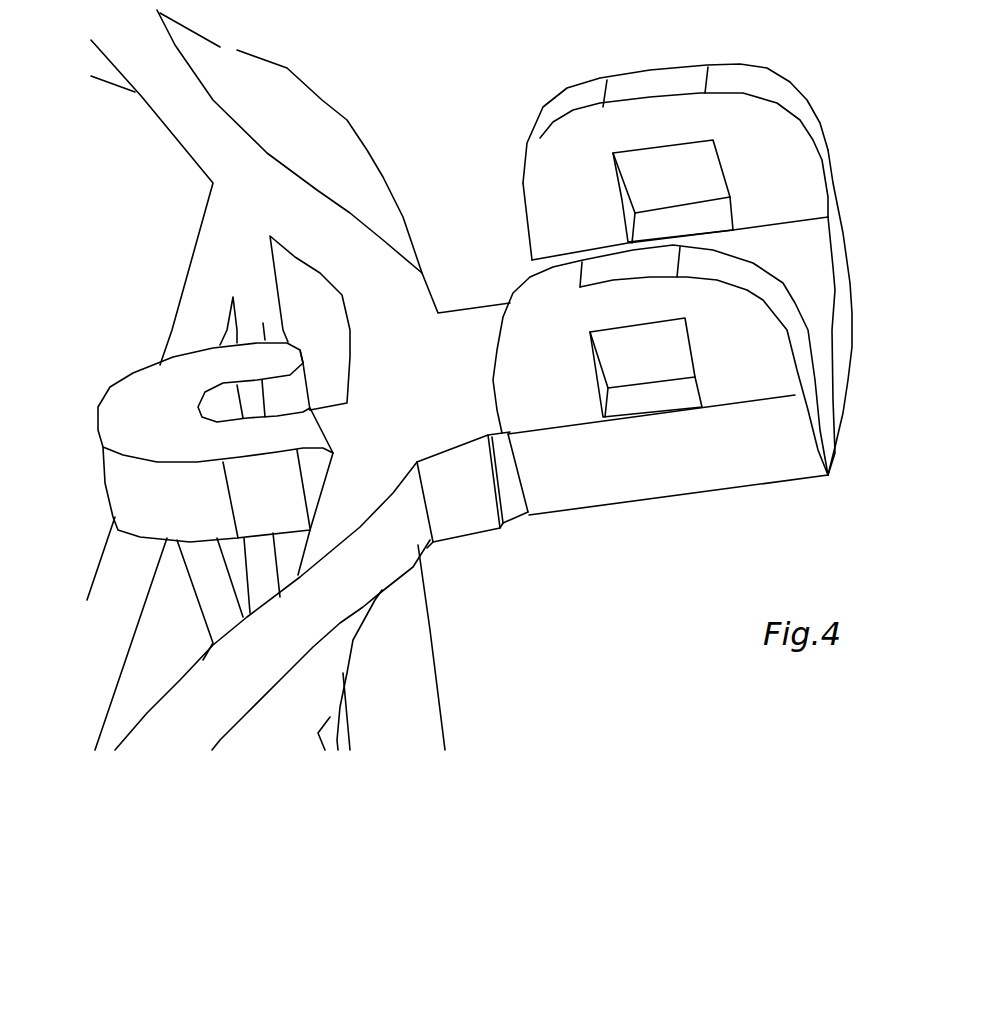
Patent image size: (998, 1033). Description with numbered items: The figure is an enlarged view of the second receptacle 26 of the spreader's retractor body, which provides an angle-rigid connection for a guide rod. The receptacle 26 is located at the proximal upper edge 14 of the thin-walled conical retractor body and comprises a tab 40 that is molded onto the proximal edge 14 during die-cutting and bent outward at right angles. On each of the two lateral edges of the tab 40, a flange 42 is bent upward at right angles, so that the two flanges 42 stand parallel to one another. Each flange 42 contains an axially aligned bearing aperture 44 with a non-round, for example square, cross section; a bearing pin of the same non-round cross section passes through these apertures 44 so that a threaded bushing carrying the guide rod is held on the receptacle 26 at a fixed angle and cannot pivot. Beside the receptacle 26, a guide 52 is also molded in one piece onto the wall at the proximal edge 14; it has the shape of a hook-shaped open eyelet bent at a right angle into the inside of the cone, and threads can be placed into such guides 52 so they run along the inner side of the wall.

The proximal upper edge 14 is at (205, 133).
The second receptacle 26 is at (864, 173).
The tab 40 is at (813, 327).
The flange 42 is at (575, 182).
The bearing aperture 44 is at (677, 182).
The guide 52 is at (157, 407).